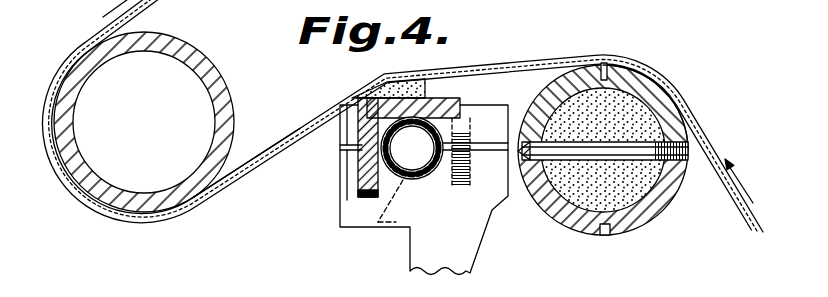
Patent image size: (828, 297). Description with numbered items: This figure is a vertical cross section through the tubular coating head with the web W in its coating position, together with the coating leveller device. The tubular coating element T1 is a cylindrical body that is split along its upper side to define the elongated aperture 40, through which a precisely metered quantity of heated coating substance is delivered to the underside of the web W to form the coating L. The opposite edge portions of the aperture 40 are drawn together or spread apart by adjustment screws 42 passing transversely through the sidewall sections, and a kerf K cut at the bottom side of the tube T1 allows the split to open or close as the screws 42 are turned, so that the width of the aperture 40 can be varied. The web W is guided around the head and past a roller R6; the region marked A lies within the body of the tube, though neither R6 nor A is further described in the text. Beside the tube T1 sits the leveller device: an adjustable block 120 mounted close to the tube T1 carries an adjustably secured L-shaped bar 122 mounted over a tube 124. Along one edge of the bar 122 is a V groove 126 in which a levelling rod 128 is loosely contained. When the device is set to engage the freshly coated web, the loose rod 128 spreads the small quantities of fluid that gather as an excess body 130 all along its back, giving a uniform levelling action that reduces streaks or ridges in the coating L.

The roller R6 is at (197, 57).
The coating L is at (254, 173).
The web of material W is at (700, 137).
The adjustable block 120 is at (358, 207).
The L-shaped bar 122 is at (355, 181).
The tube 124 is at (433, 178).
The V groove 126 is at (357, 112).
The levelling rod 128 is at (366, 88).
The excess body 130 is at (397, 80).
The aperture 40 is at (567, 93).
The adjustment screws 42 is at (557, 180).
The tubular coating element T1 is at (660, 104).
The core A is at (600, 183).
The kerf K is at (605, 236).